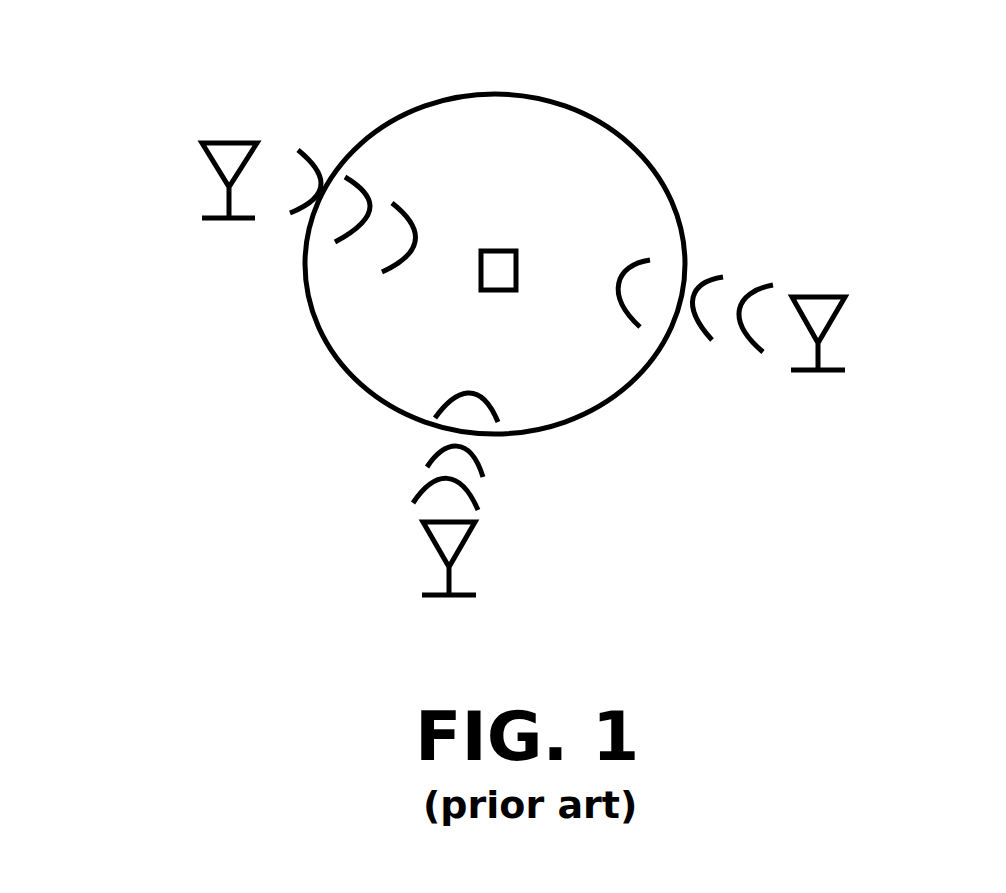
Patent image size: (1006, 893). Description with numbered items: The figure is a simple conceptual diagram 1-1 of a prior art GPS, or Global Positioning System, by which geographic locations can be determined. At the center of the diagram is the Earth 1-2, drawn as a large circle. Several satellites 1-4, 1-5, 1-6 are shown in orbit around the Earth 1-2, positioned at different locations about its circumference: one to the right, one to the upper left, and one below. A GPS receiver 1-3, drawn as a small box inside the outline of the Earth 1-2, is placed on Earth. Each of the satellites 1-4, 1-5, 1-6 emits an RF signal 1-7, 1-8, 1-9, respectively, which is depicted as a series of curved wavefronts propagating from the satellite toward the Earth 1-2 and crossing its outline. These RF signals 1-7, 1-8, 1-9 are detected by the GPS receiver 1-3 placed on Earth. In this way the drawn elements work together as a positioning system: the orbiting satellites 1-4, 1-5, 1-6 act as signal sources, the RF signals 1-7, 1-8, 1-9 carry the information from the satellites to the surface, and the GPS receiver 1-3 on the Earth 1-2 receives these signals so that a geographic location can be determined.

The simple conceptual diagram 1-1 is at (798, 155).
The Earth 1-2 is at (578, 107).
The GPS receiver 1-3 is at (485, 248).
The satellite 1-4 is at (833, 318).
The satellite 1-5 is at (210, 167).
The satellite 1-6 is at (427, 540).
The RF signal 1-7 is at (703, 272).
The RF signal 1-8 is at (308, 153).
The RF signal 1-9 is at (432, 460).